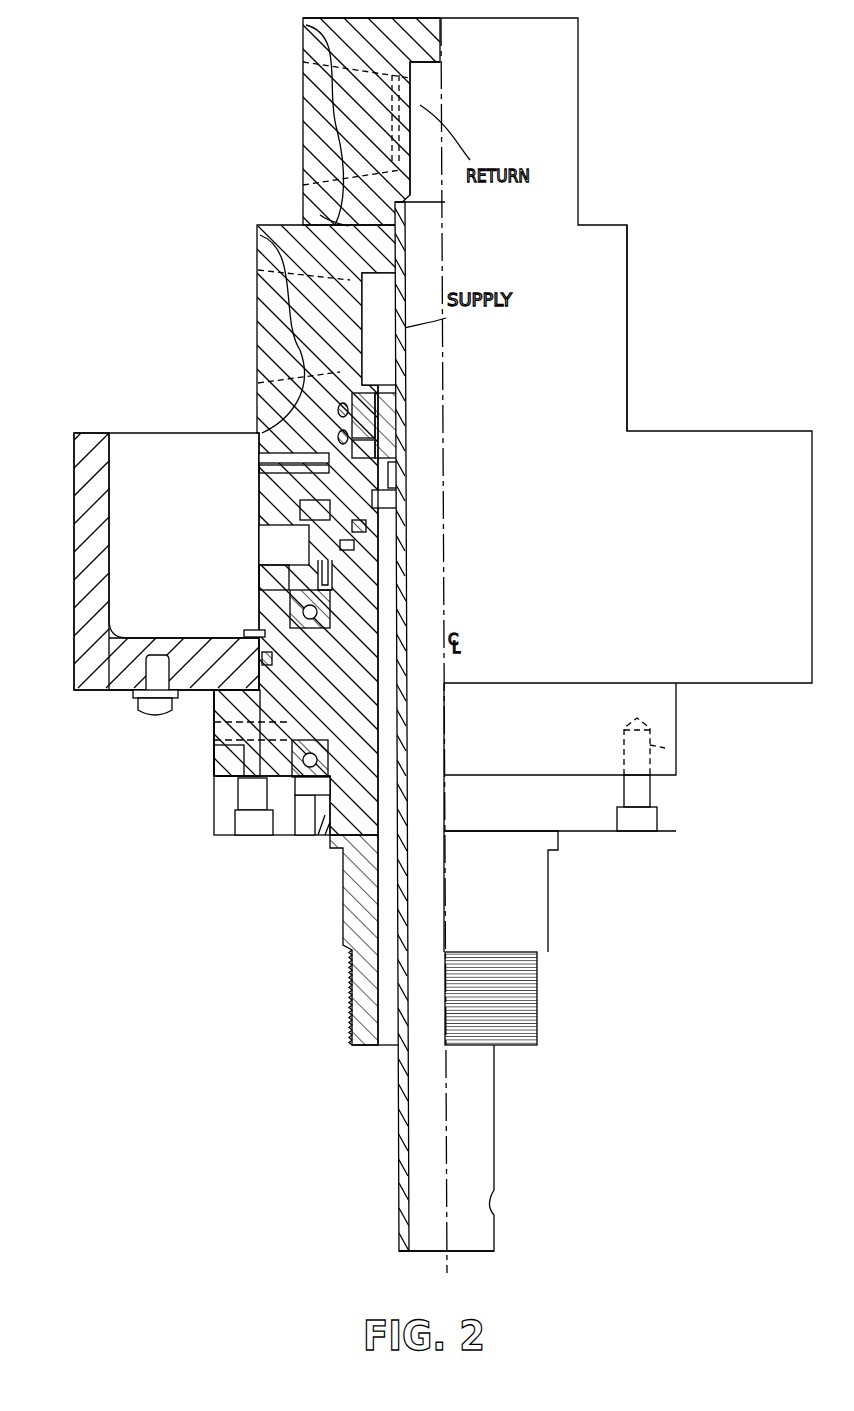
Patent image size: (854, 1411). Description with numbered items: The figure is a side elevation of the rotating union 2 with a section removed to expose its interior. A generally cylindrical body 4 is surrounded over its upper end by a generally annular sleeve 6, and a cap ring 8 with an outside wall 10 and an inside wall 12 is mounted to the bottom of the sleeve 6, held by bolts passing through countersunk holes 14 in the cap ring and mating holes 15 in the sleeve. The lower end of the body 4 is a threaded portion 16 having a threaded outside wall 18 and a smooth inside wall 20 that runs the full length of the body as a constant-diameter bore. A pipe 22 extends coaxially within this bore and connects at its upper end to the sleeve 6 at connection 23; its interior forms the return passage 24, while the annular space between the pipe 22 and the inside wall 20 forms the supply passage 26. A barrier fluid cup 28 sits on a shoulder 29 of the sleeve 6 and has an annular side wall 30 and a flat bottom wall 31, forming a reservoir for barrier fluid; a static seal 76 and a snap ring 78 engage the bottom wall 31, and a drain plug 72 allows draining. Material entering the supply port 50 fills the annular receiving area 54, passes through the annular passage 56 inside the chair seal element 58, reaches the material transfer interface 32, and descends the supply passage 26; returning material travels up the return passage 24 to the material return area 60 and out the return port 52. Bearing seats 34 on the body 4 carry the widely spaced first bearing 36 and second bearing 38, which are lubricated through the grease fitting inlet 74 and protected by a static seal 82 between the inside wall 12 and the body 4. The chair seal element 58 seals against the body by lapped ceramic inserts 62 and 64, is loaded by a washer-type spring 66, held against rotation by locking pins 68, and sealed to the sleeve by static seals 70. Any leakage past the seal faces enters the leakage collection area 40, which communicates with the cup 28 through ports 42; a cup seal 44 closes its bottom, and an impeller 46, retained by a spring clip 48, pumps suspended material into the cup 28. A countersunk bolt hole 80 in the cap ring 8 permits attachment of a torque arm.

The rotating union 2 is at (628, 76).
The body 4 is at (550, 900).
The sleeve 6 is at (628, 306).
The cap ring 8 is at (678, 790).
The outside wall 10 is at (214, 800).
The inside wall 12 is at (290, 836).
The countersunk holes 14 is at (640, 832).
The mating holes 15 is at (655, 747).
The threaded portion 16 is at (540, 1002).
The threaded outside wall 18 is at (353, 985).
The inside wall 20 is at (372, 1048).
The pipe 22 is at (496, 1125).
The pipe connection 23 is at (342, 222).
The return passage 24 is at (420, 1255).
The supply passage 26 is at (387, 1054).
The barrier fluid cup 28 is at (165, 432).
The shoulder 29 is at (216, 703).
The side wall 30 is at (76, 505).
The bottom wall 31 is at (134, 660).
The material transfer interface 32 is at (391, 491).
The bearing seats 34 is at (335, 605).
The first bearing 36 is at (240, 753).
The second bearing 38 is at (295, 598).
The leakage collection area 40 is at (312, 512).
The ports 42 is at (259, 548).
The cup seal 44 is at (340, 575).
The impeller 46 is at (354, 528).
The spring clip 48 is at (348, 550).
The supply port 50 is at (250, 310).
The return port 52 is at (300, 90).
The annular receiving area 54 is at (380, 292).
The annular passage 56 is at (385, 445).
The chair seal element 58 is at (385, 390).
The material return area 60 is at (442, 75).
The ceramic insert 62 is at (300, 462).
The ceramic insert 64 is at (300, 484).
The washer-type spring 66 is at (338, 428).
The locking pins 68 is at (398, 472).
The static seals 70 is at (394, 410).
The drain plug 72 is at (135, 702).
The grease fitting inlet 74 is at (216, 735).
The static seal 76 is at (262, 658).
The snap ring 78 is at (248, 632).
The countersunk bolt hole 80 is at (250, 836).
The static seal 82 is at (308, 836).